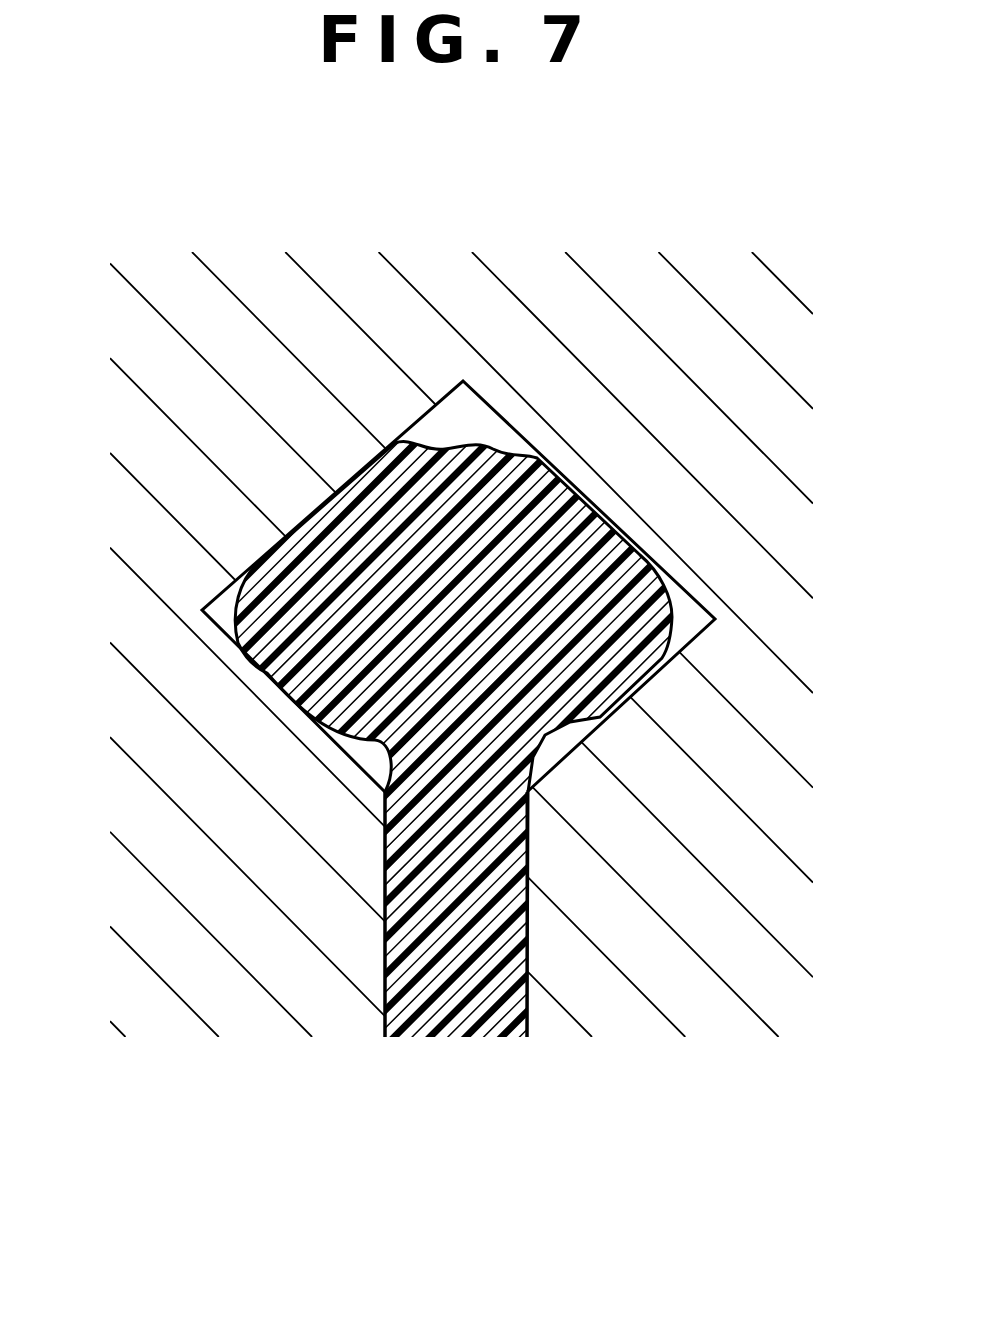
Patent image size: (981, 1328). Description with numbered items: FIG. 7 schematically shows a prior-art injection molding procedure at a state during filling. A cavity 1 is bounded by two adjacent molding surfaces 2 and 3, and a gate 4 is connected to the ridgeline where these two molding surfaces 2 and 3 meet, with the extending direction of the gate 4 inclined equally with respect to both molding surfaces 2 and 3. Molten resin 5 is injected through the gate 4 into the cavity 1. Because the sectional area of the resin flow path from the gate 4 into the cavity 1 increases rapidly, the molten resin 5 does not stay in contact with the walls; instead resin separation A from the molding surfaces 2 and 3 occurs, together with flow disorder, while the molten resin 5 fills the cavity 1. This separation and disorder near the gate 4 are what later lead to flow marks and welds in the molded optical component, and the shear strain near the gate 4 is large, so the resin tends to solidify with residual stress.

The cavity 1 is at (472, 430).
The molding surface 2 is at (648, 674).
The molding surface 3 is at (270, 674).
The gate 4 is at (523, 992).
The molten resin 5 is at (414, 970).
The resin separation A is at (372, 752).